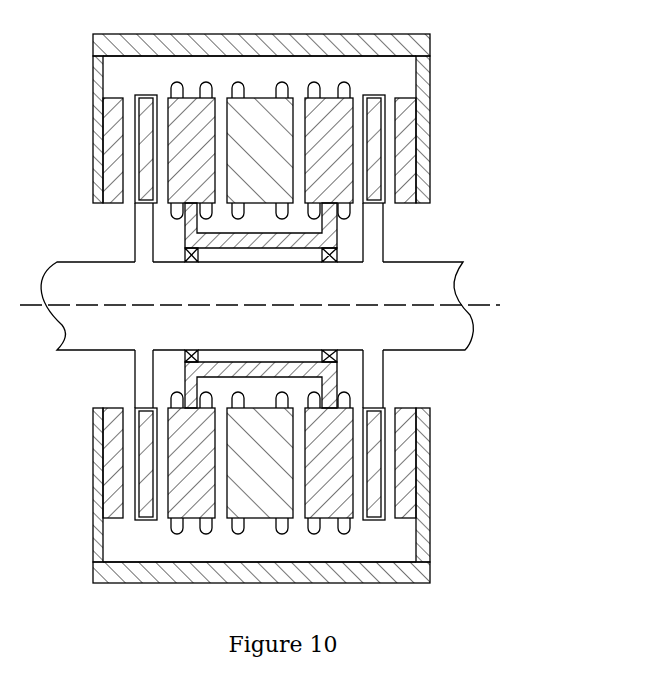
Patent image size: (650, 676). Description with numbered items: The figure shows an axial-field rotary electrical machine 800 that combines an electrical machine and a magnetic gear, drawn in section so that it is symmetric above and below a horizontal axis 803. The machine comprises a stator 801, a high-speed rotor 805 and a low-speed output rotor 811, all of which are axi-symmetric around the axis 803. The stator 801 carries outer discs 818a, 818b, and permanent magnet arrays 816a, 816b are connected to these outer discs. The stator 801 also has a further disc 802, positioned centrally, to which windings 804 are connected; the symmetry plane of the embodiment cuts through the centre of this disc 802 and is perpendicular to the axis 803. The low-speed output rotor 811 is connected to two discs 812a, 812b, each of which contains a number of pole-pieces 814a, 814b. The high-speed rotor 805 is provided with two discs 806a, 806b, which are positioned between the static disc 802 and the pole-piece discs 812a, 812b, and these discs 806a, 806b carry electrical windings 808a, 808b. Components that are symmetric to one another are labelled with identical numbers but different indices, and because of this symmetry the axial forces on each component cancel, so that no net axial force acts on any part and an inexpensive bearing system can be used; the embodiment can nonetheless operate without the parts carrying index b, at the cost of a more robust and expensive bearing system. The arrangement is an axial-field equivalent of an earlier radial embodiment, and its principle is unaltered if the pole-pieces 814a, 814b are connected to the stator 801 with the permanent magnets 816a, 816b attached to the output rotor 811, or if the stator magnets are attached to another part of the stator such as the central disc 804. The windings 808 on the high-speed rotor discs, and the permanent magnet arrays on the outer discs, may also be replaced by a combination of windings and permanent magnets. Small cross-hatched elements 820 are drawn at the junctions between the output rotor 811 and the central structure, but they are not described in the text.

The electrical machine 800 is at (463, 388).
The stator 801 is at (284, 36).
The further disc 802 is at (228, 97).
The axis 803 is at (500, 310).
The windings 804 is at (278, 92).
The high-speed rotor 805 is at (337, 368).
The disc 806a is at (168, 97).
The disc 806b is at (354, 97).
The windings 808 is at (181, 222).
The electrical windings 808a is at (183, 86).
The electrical windings 808b is at (345, 86).
The low-speed output rotor 811 is at (433, 283).
The disc 812a is at (145, 218).
The disc 812b is at (375, 223).
The pole-pieces 814a is at (150, 95).
The pole-pieces 814b is at (373, 95).
The permanent magnet array 816a is at (112, 187).
The permanent magnet array 816b is at (413, 183).
The outer disc 818a is at (92, 130).
The outer disc 818b is at (433, 123).
The seal 820 is at (330, 256).